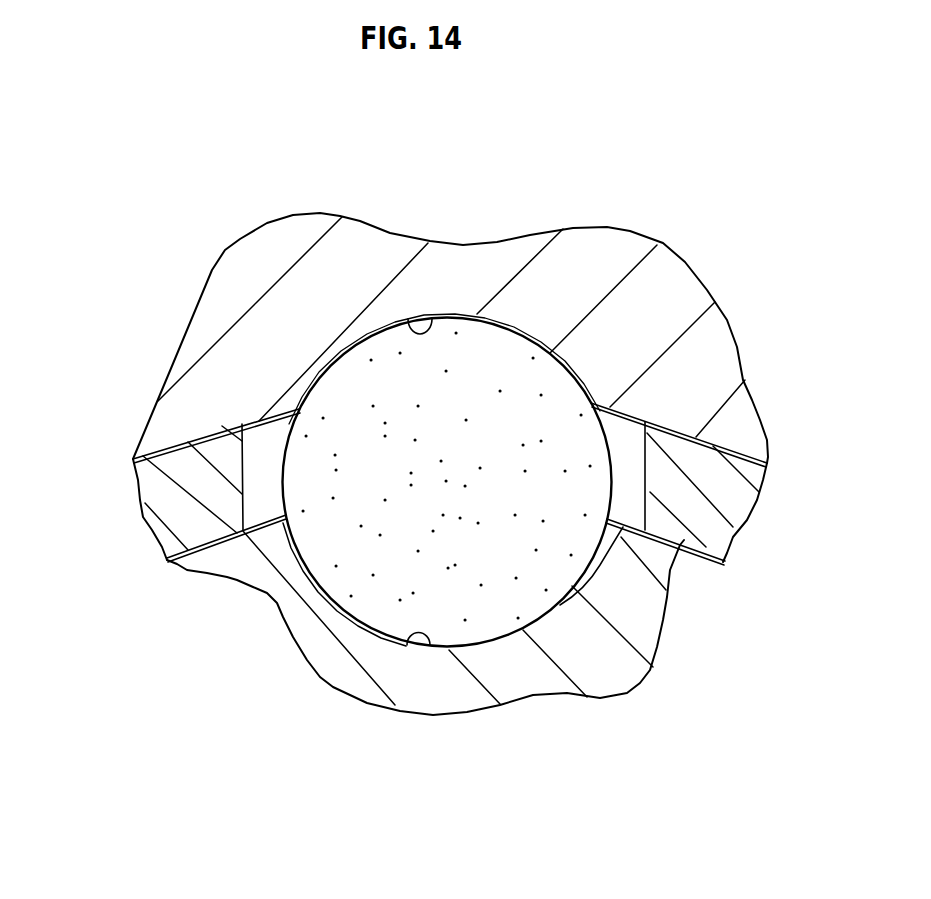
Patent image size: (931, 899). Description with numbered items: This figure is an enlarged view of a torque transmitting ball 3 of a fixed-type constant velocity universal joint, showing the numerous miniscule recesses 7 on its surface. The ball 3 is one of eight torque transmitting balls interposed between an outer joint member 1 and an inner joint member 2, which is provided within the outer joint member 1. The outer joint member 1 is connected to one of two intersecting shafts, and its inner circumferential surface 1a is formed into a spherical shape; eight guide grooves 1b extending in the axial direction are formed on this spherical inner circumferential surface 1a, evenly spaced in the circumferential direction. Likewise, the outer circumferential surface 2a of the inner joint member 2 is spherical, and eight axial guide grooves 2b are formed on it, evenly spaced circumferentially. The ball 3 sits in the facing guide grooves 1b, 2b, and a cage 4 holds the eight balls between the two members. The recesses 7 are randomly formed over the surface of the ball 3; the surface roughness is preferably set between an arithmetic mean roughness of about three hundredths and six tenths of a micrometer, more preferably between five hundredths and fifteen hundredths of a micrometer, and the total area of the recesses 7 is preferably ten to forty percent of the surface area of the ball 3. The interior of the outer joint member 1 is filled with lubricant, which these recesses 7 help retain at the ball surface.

The outer joint member 1 is at (226, 300).
The inner circumferential surface 1a is at (180, 446).
The guide grooves 1b is at (412, 327).
The inner joint member 2 is at (650, 630).
The outer circumferential surface 2a is at (198, 534).
The guide grooves 2b is at (405, 644).
The torque transmitting ball 3 is at (325, 532).
The cage 4 is at (717, 470).
The miniscule recesses 7 is at (450, 372).